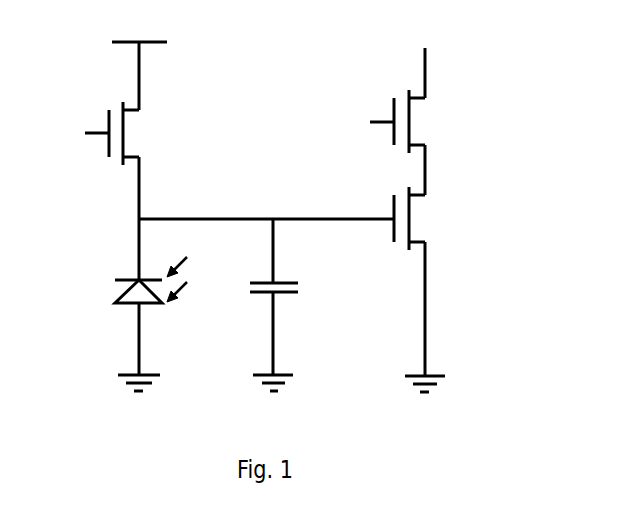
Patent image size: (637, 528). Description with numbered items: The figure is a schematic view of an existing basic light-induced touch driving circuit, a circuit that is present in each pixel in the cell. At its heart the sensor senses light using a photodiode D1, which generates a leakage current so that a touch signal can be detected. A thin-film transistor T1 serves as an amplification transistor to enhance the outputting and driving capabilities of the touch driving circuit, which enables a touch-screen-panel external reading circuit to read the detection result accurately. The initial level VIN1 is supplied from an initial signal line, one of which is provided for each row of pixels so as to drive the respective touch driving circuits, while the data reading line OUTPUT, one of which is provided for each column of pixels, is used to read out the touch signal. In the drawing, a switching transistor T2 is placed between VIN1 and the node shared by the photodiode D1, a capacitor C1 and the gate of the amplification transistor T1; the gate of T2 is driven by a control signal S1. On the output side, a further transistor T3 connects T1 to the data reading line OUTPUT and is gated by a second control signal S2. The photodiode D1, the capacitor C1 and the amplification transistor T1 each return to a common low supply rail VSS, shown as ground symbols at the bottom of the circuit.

The thin-film transistor T1 is at (426, 218).
The reset switching transistor T2 is at (138, 133).
The output switching transistor T3 is at (425, 121).
The photodiode D1 is at (133, 316).
The storage capacitor C1 is at (291, 297).
The first control signal S1 is at (82, 134).
The second control signal S2 is at (366, 123).
The initial level VIN1 is at (139, 59).
The data reading line OUTPUT is at (432, 57).
The ground / low supply voltage VSS is at (282, 400).